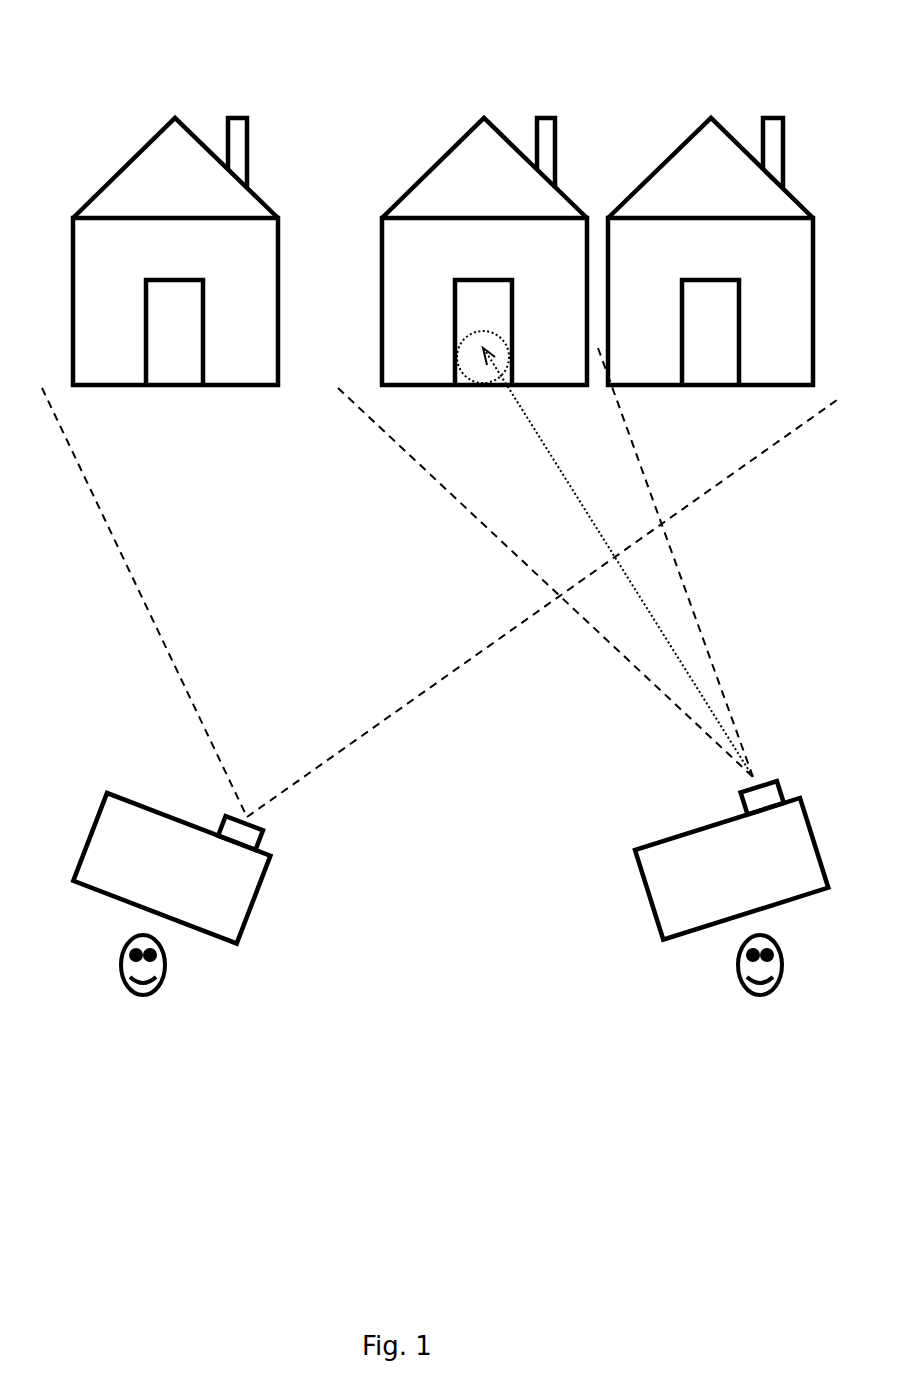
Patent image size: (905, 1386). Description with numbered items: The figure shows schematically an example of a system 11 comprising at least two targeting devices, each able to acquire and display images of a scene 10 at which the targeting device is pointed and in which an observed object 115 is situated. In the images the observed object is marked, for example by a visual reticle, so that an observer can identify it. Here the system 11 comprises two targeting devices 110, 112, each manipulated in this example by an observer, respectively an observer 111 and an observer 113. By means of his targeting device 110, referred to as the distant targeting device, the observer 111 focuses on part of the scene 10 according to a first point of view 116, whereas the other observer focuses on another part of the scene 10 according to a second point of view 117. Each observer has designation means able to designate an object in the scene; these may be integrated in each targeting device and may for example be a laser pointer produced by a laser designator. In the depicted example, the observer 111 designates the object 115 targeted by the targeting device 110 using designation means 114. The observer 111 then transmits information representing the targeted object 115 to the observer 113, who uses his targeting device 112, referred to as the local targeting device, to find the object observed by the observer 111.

The scene 10 is at (772, 42).
The system 11 is at (802, 702).
The targeting device 110 is at (810, 815).
The observer 111 is at (783, 967).
The targeting device 112 is at (260, 882).
The observer 113 is at (167, 970).
The designation means 114 is at (502, 330).
The observed object 115 is at (483, 267).
The first point of view 116 is at (702, 595).
The second point of view 117 is at (155, 628).